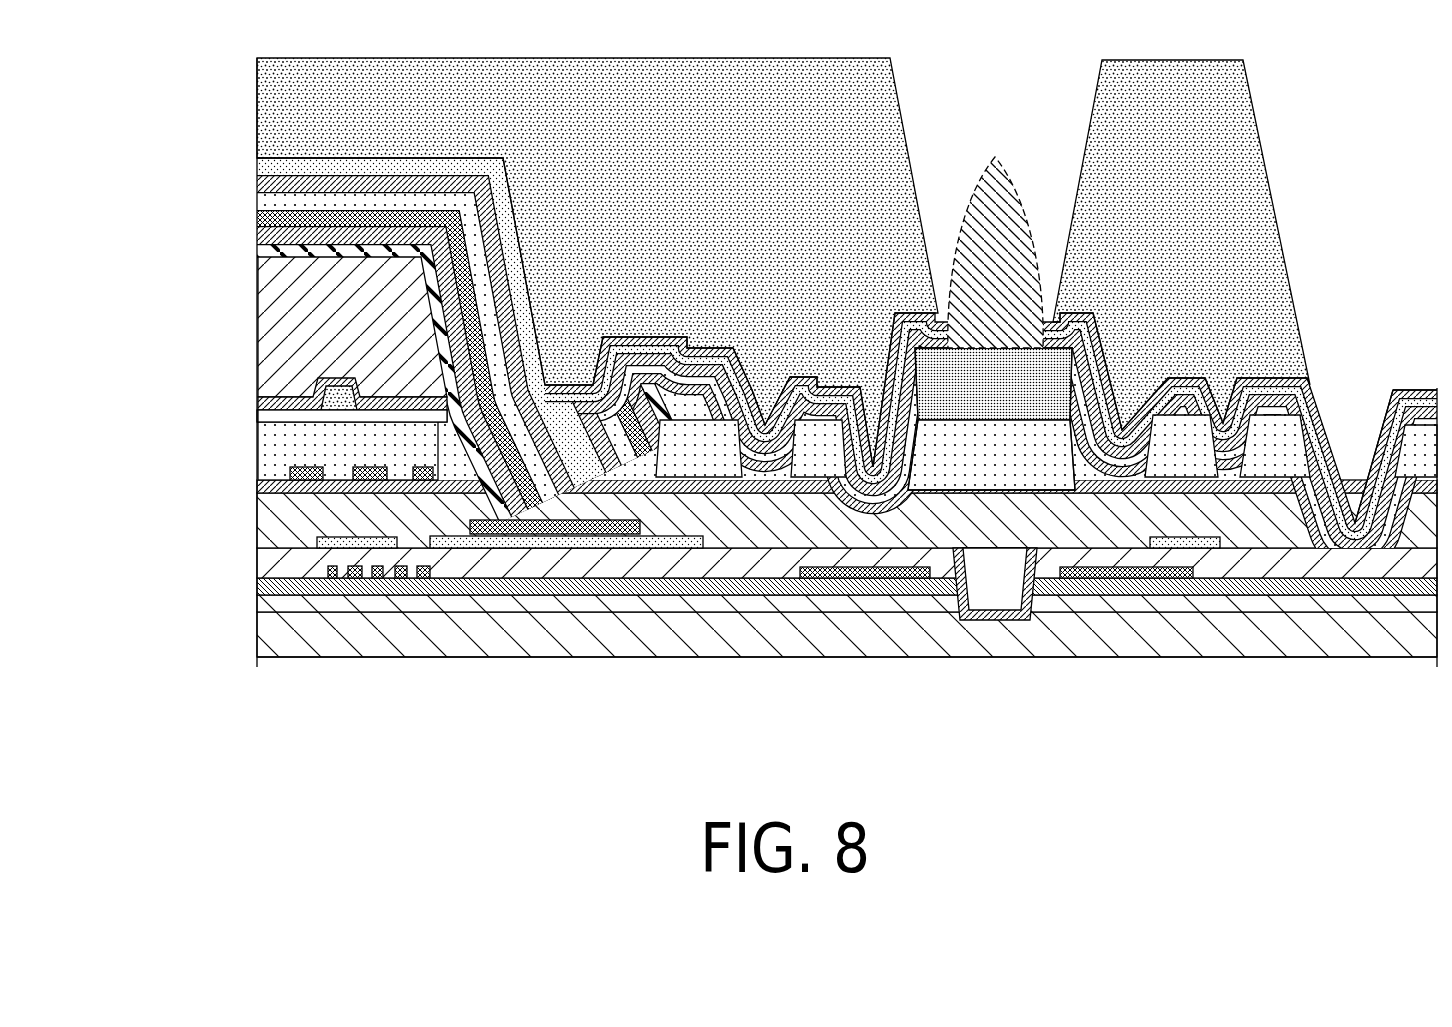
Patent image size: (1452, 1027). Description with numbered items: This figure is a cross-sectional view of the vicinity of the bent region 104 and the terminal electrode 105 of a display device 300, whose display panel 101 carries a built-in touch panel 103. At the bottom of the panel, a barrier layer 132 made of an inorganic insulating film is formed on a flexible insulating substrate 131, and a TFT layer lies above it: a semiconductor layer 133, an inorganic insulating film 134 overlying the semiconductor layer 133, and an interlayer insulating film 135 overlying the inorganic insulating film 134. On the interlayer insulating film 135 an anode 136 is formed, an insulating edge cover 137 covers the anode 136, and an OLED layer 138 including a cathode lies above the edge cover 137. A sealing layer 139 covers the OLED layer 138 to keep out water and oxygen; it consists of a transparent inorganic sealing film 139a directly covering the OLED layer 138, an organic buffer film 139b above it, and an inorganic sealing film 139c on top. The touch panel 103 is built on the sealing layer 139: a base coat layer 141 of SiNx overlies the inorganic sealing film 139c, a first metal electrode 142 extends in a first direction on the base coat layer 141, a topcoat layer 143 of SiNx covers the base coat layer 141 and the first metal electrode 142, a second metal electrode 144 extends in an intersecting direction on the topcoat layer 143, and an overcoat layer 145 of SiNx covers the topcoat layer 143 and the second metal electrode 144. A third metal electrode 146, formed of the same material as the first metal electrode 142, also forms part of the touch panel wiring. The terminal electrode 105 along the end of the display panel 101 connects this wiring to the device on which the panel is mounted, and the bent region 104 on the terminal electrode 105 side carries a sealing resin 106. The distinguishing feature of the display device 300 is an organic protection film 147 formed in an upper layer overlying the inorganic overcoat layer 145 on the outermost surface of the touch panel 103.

The display device 300 is at (760, 366).
The display panel 101 is at (756, 483).
The touch panel 103 is at (760, 269).
The bent region 104 is at (1093, 668).
The terminal electrode 105 is at (1432, 668).
The sealing resin 106 is at (995, 157).
The flexible insulating substrate 131 is at (268, 635).
The barrier layer 132 is at (267, 605).
The semiconductor layer 133 is at (268, 588).
The inorganic insulating film 134 is at (268, 562).
The interlayer insulating film 135 is at (267, 517).
The anode 136 is at (263, 487).
The edge cover 137 is at (273, 450).
The OLED layer 138 is at (288, 411).
The sealing layer 139 is at (760, 274).
The inorganic sealing film 139a is at (317, 389).
The organic buffer film 139b is at (273, 327).
The inorganic sealing film 139c is at (260, 253).
The base coat layer 141 is at (267, 235).
The first metal electrode 142 is at (247, 220).
The topcoat layer 143 is at (263, 202).
The second metal electrode 144 is at (252, 183).
The overcoat layer 145 is at (267, 168).
The third metal electrode 146 is at (915, 312).
The organic protection film 147 is at (275, 96).